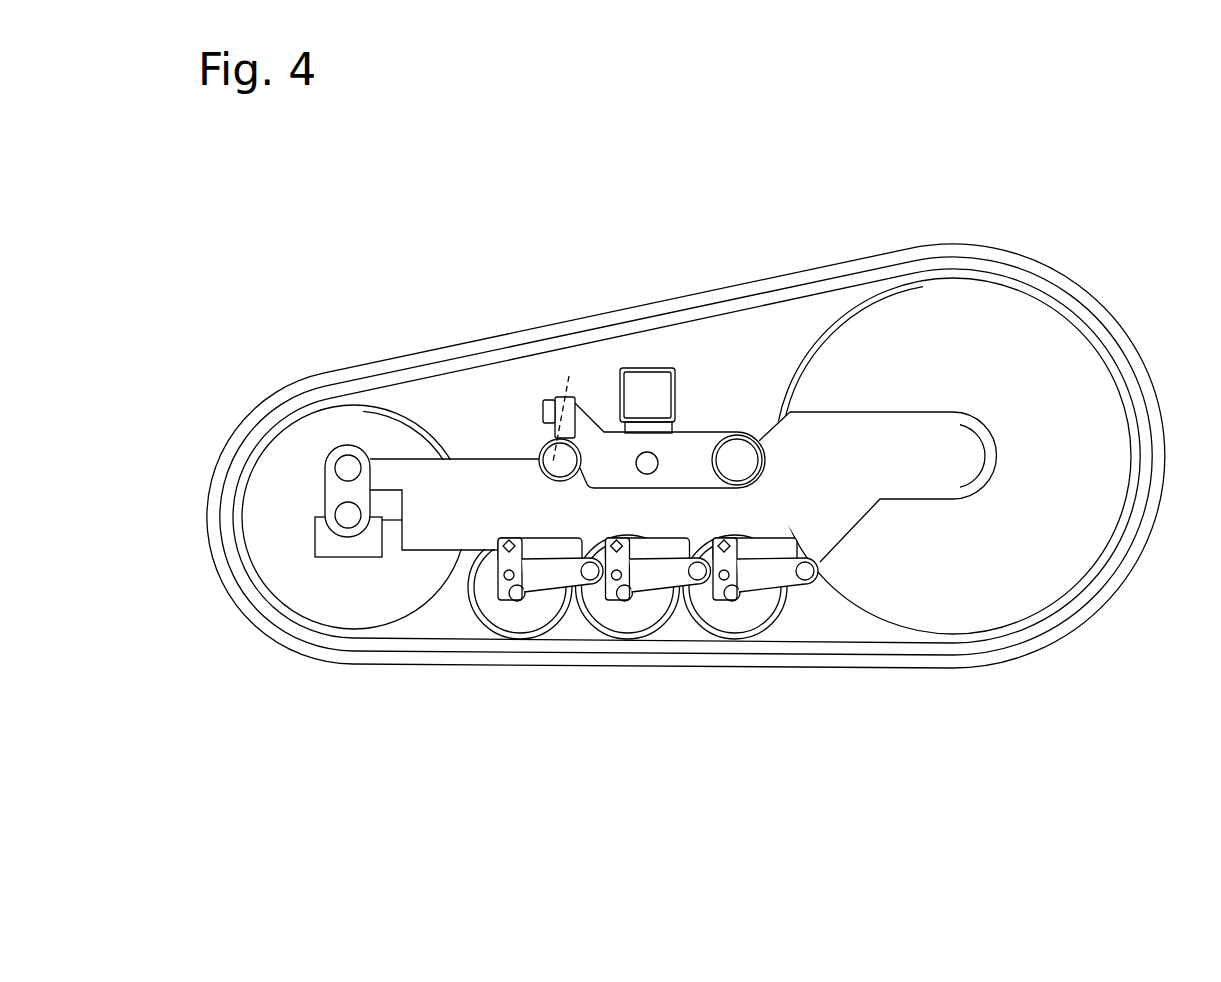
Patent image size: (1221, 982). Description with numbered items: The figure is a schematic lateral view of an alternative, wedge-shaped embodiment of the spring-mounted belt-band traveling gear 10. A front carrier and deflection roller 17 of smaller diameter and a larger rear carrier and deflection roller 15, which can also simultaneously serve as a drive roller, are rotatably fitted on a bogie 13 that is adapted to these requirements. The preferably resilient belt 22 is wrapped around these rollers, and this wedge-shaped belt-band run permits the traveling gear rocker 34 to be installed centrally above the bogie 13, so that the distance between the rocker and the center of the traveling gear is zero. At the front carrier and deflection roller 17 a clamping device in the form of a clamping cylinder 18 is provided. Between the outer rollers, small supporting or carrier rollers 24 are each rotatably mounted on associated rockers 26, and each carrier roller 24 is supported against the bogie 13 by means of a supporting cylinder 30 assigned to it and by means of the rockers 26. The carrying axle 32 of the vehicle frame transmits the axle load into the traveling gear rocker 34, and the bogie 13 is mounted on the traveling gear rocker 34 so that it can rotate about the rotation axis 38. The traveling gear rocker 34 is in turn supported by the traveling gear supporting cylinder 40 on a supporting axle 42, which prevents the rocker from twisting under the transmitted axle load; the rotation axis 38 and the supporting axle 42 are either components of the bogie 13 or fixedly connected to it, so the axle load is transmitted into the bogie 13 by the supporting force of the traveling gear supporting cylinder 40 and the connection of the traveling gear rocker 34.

The belt-band traveling gear 10 is at (1092, 758).
The bogie 13 is at (489, 488).
The rear carrier and deflection roller 15 is at (975, 314).
The front carrier and deflection roller 17 is at (283, 580).
The clamping cylinder 18 is at (333, 491).
The belt 22 is at (893, 274).
The carrier rollers 24 is at (517, 620).
The rockers 26 is at (549, 582).
The supporting cylinder 30 is at (483, 602).
The carrying axle 32 is at (650, 391).
The traveling gear rocker 34 is at (690, 457).
The rotation axis 38 is at (733, 462).
The traveling gear supporting cylinder 40 is at (570, 404).
The supporting axle 42 is at (547, 458).